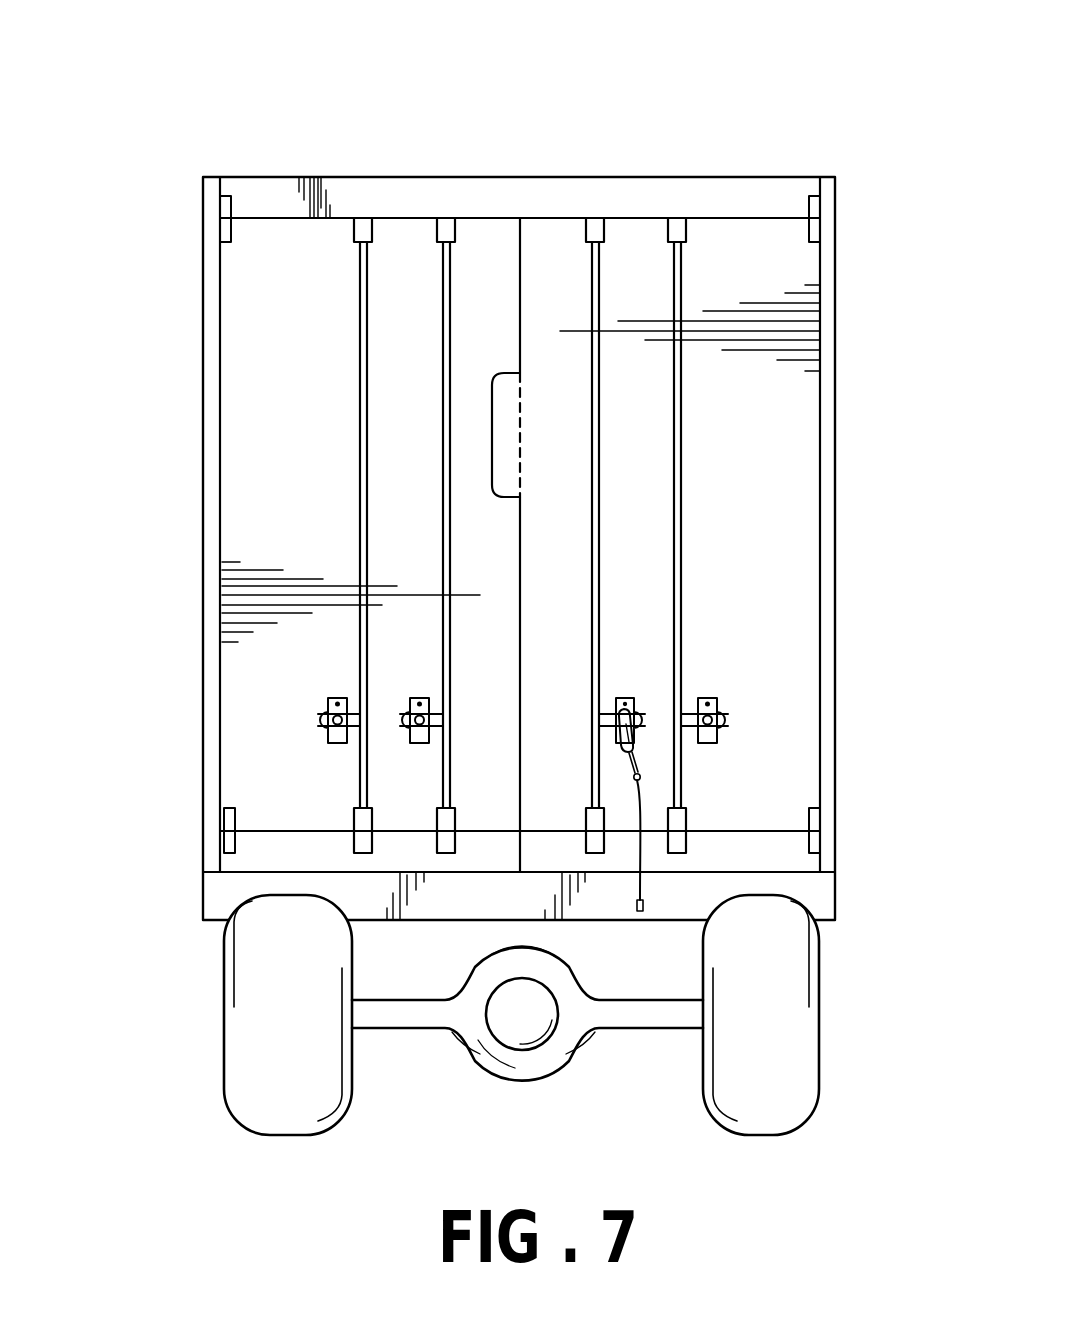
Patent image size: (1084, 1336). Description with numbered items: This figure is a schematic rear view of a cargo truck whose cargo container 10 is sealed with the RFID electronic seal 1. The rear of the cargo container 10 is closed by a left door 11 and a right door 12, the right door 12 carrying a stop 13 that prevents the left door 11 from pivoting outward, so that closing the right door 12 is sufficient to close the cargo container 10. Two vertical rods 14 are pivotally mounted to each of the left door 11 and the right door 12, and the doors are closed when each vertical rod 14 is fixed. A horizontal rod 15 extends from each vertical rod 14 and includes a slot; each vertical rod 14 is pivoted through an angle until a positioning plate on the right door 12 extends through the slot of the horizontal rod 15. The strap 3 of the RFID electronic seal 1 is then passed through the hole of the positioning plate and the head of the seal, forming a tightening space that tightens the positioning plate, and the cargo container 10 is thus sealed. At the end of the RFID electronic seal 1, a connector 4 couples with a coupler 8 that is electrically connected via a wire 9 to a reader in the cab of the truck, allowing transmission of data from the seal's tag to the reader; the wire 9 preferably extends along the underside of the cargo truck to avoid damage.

The cargo container 10 is at (645, 160).
The left door 11 is at (253, 506).
The right door 12 is at (787, 454).
The stop 13 is at (509, 372).
The vertical rod 14 is at (603, 527).
The horizontal rod 15 is at (645, 720).
The RFID electronic seal 1 is at (785, 721).
The strap 3 is at (640, 757).
The connector 4 is at (792, 788).
The coupler 8 is at (641, 779).
The wire 9 is at (645, 850).